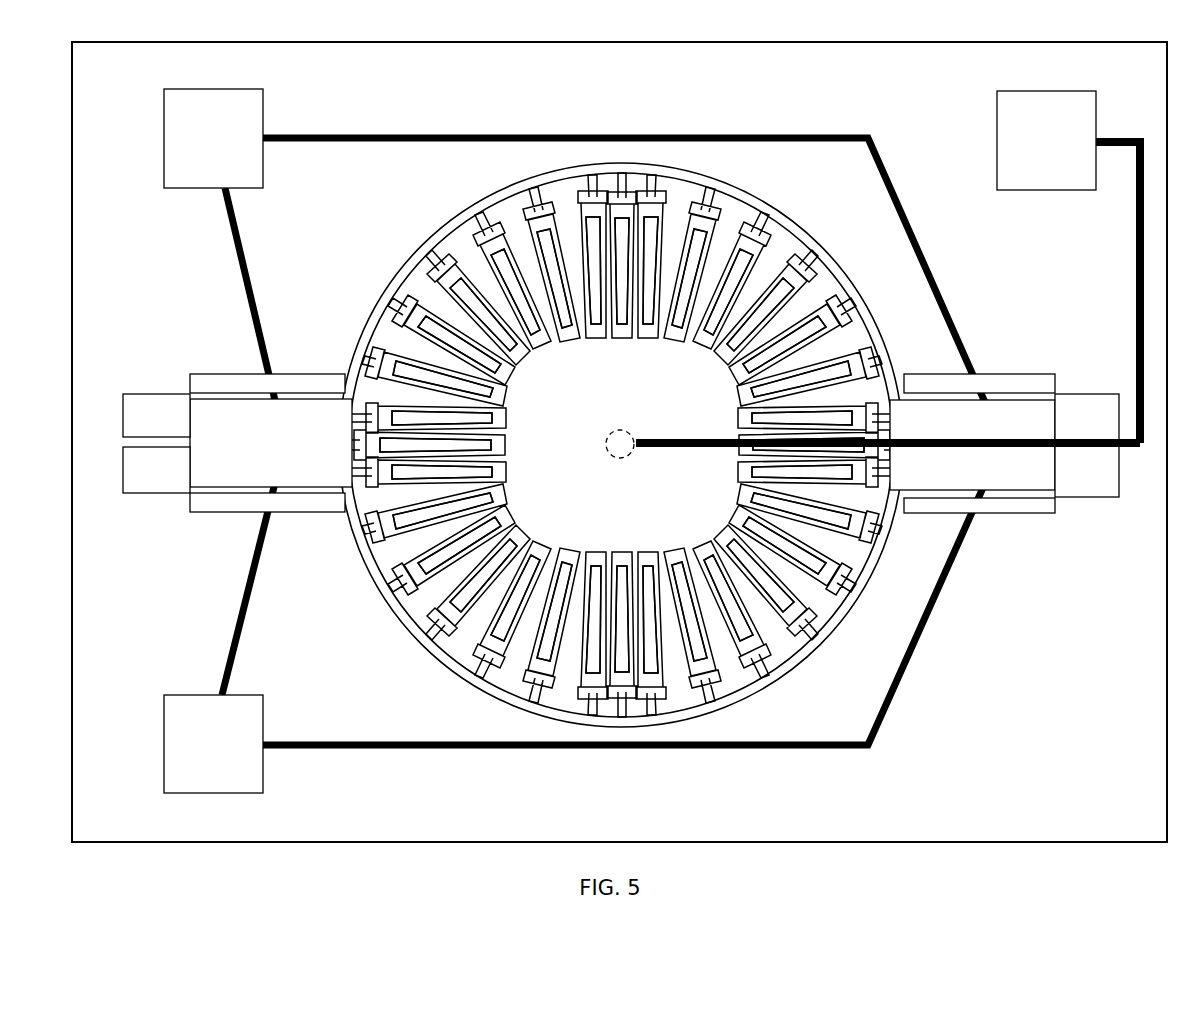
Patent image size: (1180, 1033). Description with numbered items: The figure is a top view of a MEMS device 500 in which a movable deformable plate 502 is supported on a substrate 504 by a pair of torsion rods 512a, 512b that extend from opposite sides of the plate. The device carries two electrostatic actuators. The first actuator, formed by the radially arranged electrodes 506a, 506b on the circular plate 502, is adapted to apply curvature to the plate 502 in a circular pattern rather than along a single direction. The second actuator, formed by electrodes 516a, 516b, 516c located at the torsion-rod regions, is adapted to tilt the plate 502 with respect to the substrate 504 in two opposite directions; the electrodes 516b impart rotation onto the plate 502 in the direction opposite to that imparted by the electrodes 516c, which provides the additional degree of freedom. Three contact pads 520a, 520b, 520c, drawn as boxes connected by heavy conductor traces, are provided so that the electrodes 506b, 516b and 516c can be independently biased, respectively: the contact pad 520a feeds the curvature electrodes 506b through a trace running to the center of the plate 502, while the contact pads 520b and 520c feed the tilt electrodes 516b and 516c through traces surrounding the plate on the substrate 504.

The MEMS device 500 is at (1146, 887).
The movable deformable plate 502 is at (392, 621).
The substrate 504 is at (943, 716).
The electrodes of actuator 506 506a is at (467, 243).
The electrodes of actuator 506 506b is at (678, 360).
The torsion rod 512a is at (158, 448).
The torsion rod 512b is at (1090, 450).
The electrodes of actuator 516 516a is at (227, 463).
The electrodes of actuator 516 516b is at (305, 385).
The electrodes of actuator 516 516c is at (1012, 514).
The contact pad 520a is at (1068, 267).
The contact pad 520b is at (213, 138).
The contact pad 520c is at (307, 513).